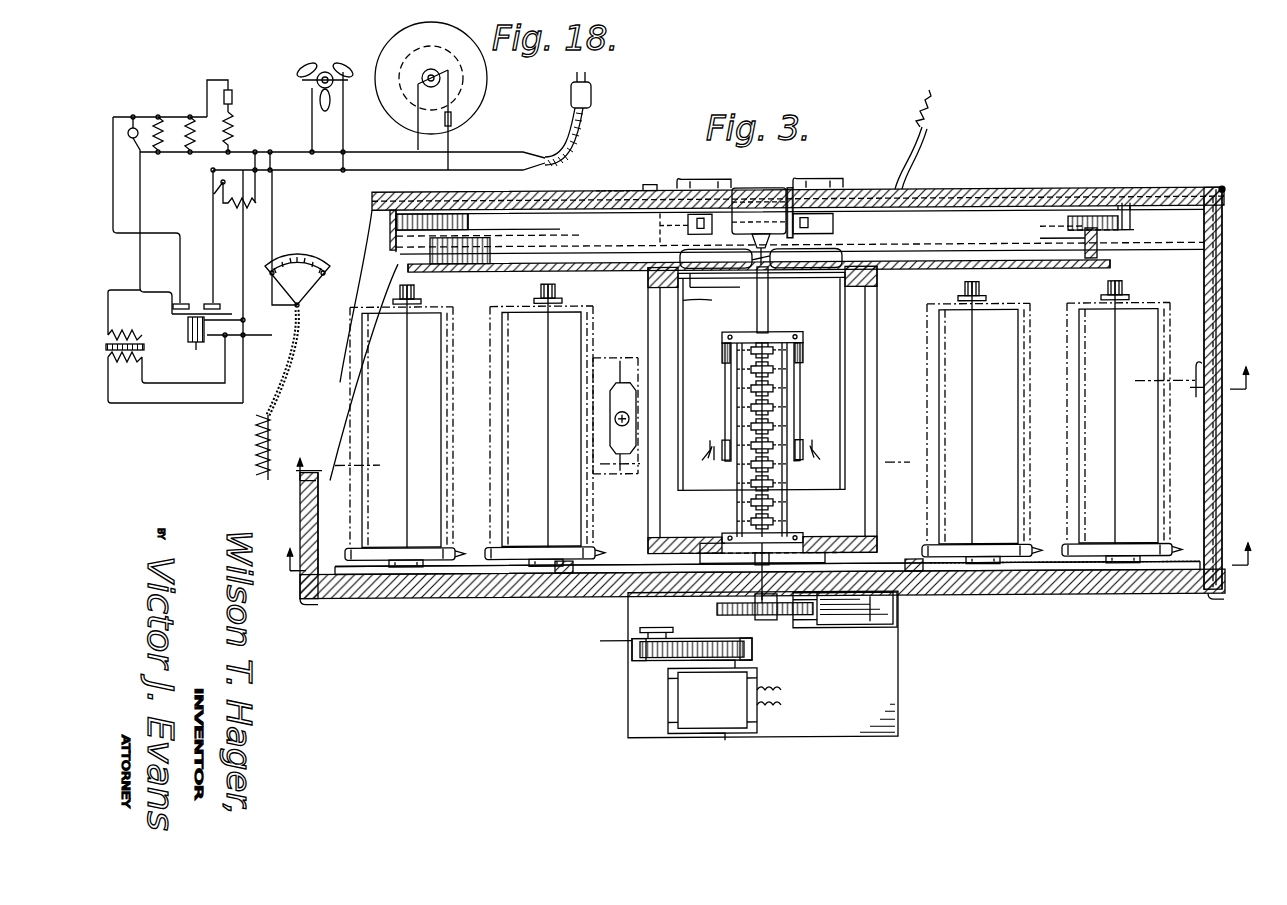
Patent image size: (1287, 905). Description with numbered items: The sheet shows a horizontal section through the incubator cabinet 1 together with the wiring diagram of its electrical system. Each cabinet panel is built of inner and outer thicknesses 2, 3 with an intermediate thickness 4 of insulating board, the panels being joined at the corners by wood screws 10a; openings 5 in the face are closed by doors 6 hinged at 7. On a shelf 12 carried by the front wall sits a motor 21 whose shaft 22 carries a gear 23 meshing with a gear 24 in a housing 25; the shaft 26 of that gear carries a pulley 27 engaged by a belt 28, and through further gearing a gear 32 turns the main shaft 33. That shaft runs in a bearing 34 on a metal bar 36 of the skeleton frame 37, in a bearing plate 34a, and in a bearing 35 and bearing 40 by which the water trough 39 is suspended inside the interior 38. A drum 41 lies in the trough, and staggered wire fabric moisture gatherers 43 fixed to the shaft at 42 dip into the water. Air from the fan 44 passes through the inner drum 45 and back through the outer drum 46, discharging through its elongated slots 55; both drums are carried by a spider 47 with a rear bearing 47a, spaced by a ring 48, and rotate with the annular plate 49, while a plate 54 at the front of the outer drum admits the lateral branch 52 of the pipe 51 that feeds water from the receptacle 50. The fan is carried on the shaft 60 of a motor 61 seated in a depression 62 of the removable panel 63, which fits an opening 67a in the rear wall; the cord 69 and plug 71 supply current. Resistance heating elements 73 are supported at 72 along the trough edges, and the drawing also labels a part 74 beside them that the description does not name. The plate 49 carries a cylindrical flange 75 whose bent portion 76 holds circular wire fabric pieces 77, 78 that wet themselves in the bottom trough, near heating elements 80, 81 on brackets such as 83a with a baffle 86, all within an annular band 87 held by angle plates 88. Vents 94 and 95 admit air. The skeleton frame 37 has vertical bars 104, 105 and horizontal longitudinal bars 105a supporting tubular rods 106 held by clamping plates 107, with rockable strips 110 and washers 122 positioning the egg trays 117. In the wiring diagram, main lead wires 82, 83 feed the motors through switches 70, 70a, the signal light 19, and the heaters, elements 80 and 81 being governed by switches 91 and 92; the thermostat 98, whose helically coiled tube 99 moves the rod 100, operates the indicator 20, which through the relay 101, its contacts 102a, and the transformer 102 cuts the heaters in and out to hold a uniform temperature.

In FIG. 3, the incubator cabinet 1 is at (1224, 264).
In FIG. 3, the inner thickness 2 is at (1195, 270).
In FIG. 3, the outer thickness 3 is at (1222, 290).
In FIG. 3, the intermediate thickness 4 is at (1222, 242).
In FIG. 3, the openings 5 is at (922, 612).
In FIG. 3, the doors 6 is at (1245, 576).
In FIG. 3, the hinges 7 is at (1210, 630).
In FIG. 3, the wood screws 10a is at (1240, 603).
In FIG. 3, the shelf 12 is at (898, 735).
In FIG. 18, the signal light 19 is at (131, 140).
In FIG. 18, the temperature indicating and circuit control device 20 is at (302, 275).
In FIG. 18, the motor 21 is at (434, 72).
In FIG. 3, the motor 21 is at (728, 733).
In FIG. 3, the shaft 22 is at (706, 682).
In FIG. 3, the gear 23 is at (752, 648).
In FIG. 3, the gear 24 is at (633, 655).
In FIG. 3, the housing 25 is at (650, 660).
In FIG. 3, the shaft 26 is at (611, 650).
In FIG. 3, the pulley 27 is at (640, 629).
In FIG. 3, the belt 28 is at (648, 635).
In FIG. 3, the gear 32 is at (808, 612).
In FIG. 3, the shaft 33 is at (735, 595).
In FIG. 3, the bearing 34 is at (770, 556).
In FIG. 3, the bearing plate 34a is at (740, 615).
In FIG. 3, the bearing 35 is at (750, 538).
In FIG. 3, the metal bar 36 is at (668, 580).
In FIG. 3, the skeleton frame 37 is at (955, 610).
In FIG. 3, the interior 38 is at (650, 548).
In FIG. 3, the water trough 39 is at (790, 400).
In FIG. 3, the bearing 40 is at (768, 335).
In FIG. 3, the drum 41 is at (785, 378).
In FIG. 3, the fixing point 42 is at (782, 470).
In FIG. 3, the moisture gatherers 43 is at (745, 408).
In FIG. 18, the fan 44 is at (310, 52).
In FIG. 3, the fan 44 is at (770, 280).
In FIG. 18, the inner drum 45 is at (463, 84).
In FIG. 3, the inner drum 45 is at (720, 306).
In FIG. 18, the outer drum 46 is at (484, 100).
In FIG. 3, the outer drum 46 is at (672, 296).
In FIG. 3, the spider 47 is at (668, 320).
In FIG. 3, the bearing 47a is at (740, 282).
In FIG. 3, the ring 48 is at (880, 290).
In FIG. 3, the annular plate 49 is at (925, 270).
In FIG. 3, the receptacle 50 is at (855, 622).
In FIG. 3, the pipe 51 is at (872, 622).
In FIG. 3, the lateral branch 52 is at (878, 530).
In FIG. 3, the plate 54 is at (700, 543).
In FIG. 3, the elongated slots 55 is at (868, 470).
In FIG. 18, the shaft 60 is at (316, 150).
In FIG. 3, the shaft 60 is at (756, 248).
In FIG. 18, the motor 61 is at (334, 74).
In FIG. 3, the motor 61 is at (752, 188).
In FIG. 3, the depression 62 is at (790, 188).
In FIG. 3, the panel 63 is at (648, 184).
In FIG. 3, the opening 67a is at (640, 186).
In FIG. 18, the cord 69 is at (580, 140).
In FIG. 3, the cord 69 is at (905, 158).
In FIG. 18, the switch 70 is at (348, 100).
In FIG. 18, the switch 70a is at (452, 118).
In FIG. 18, the plug 71 is at (593, 95).
In FIG. 3, the plug 71 is at (931, 93).
In FIG. 3, the supports 72 is at (724, 462).
In FIG. 18, the resistance heating elements 73 is at (186, 130).
In FIG. 3, the resistance heating elements 73 is at (800, 418).
In FIG. 3, the spring 74 is at (822, 448).
In FIG. 3, the cylindrical flange 75 is at (1085, 246).
In FIG. 3, the bent portion 76 is at (1100, 240).
In FIG. 3, the circular wire fabric pieces 77 is at (1120, 236).
In FIG. 3, the circular wire fabric pieces 78 is at (1122, 212).
In FIG. 18, the resistance heating element 80 is at (234, 128).
In FIG. 18, the resistance heating element 81 is at (237, 206).
In FIG. 3, the resistance heating element 81 is at (830, 252).
In FIG. 18, the main lead wire 82 is at (480, 150).
In FIG. 18, the main lead wire 83 is at (470, 172).
In FIG. 3, the main lead wire 83 is at (450, 178).
In FIG. 3, the bracket 83a is at (817, 218).
In FIG. 3, the baffle 86 is at (834, 226).
In FIG. 3, the annular band 87 is at (1125, 228).
In FIG. 3, the angle plates 88 is at (1140, 205).
In FIG. 18, the switch 91 is at (233, 95).
In FIG. 18, the switch 92 is at (218, 200).
In FIG. 3, the slide controlled vents 94 is at (1205, 400).
In FIG. 3, the slide controlled air vents 95 is at (822, 186).
In FIG. 18, the thermostat 98 is at (253, 446).
In FIG. 3, the thermostat 98 is at (612, 422).
In FIG. 18, the helically coiled tube 99 is at (283, 420).
In FIG. 3, the helically coiled tube 99 is at (612, 410).
In FIG. 18, the rod 100 is at (288, 372).
In FIG. 18, the relay 101 is at (192, 342).
In FIG. 18, the transformer 102 is at (108, 404).
In FIG. 18, the contacts 102a is at (215, 304).
In FIG. 3, the vertical bars 104 is at (1170, 630).
In FIG. 3, the vertical bars 105 is at (1080, 650).
In FIG. 3, the horizontal longitudinal bars 105a is at (1095, 572).
In FIG. 3, the tubular rods 106 is at (1125, 418).
In FIG. 3, the clamping plates 107 is at (1120, 546).
In FIG. 3, the strips 110 is at (1125, 540).
In FIG. 3, the egg trays 117 is at (1070, 390).
In FIG. 3, the washers 122 is at (1140, 296).